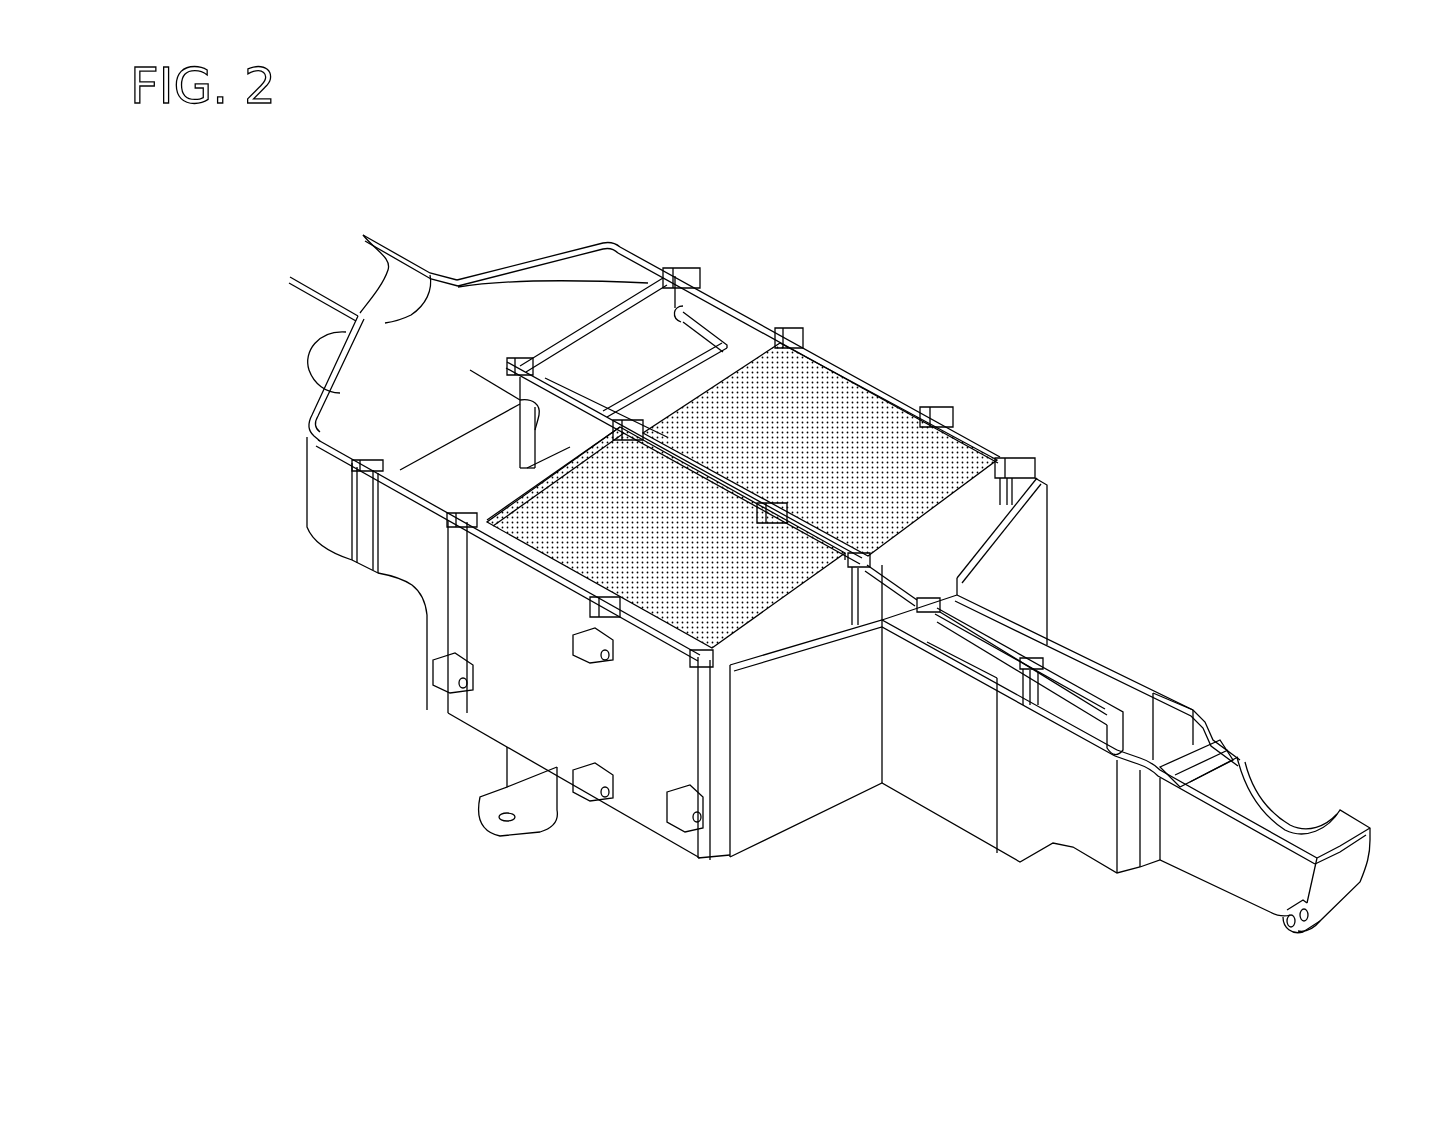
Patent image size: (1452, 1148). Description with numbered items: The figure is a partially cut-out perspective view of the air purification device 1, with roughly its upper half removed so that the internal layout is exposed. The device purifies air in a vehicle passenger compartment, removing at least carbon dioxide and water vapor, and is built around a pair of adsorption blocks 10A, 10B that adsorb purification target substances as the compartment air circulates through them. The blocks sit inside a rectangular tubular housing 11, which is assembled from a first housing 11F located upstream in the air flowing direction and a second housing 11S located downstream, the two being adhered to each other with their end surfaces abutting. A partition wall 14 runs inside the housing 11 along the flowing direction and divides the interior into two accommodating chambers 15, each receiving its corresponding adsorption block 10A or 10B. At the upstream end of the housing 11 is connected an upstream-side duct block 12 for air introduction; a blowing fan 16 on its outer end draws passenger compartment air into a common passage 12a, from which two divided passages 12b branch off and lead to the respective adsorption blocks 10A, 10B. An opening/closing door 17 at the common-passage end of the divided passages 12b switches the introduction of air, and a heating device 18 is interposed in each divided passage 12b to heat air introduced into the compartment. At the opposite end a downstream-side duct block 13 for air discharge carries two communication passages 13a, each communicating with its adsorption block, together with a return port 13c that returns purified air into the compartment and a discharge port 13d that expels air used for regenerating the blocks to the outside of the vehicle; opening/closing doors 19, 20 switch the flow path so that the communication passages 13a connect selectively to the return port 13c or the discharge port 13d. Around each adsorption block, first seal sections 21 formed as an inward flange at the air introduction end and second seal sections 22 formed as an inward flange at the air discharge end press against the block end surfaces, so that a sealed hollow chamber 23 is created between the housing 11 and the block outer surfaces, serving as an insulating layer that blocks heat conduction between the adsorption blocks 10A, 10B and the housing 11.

The air purification device 1 is at (1070, 278).
The adsorption block 10A is at (933, 460).
The adsorption block 10B is at (615, 568).
The housing 11 is at (844, 472).
The second housing 11S is at (900, 395).
The first housing 11F is at (980, 438).
The upstream-side duct block 12 is at (1073, 637).
The common passage 12a is at (1180, 734).
The divided passage 12b is at (967, 541).
The downstream-side duct block 13 is at (740, 326).
The communication passage 13a is at (447, 487).
The return port 13c is at (308, 365).
The discharge port 13d is at (343, 261).
The partition wall 14 is at (803, 537).
The accommodating chamber 15 is at (545, 570).
The blowing fan 16 is at (1355, 855).
The opening/closing door 17 is at (1147, 712).
The heating device 18 is at (1010, 630).
The opening/closing door 19 is at (590, 305).
The opening/closing door 20 is at (418, 432).
The first seal section 21 is at (1010, 463).
The second seal section 22 is at (455, 522).
The hollow chamber 23 is at (848, 376).